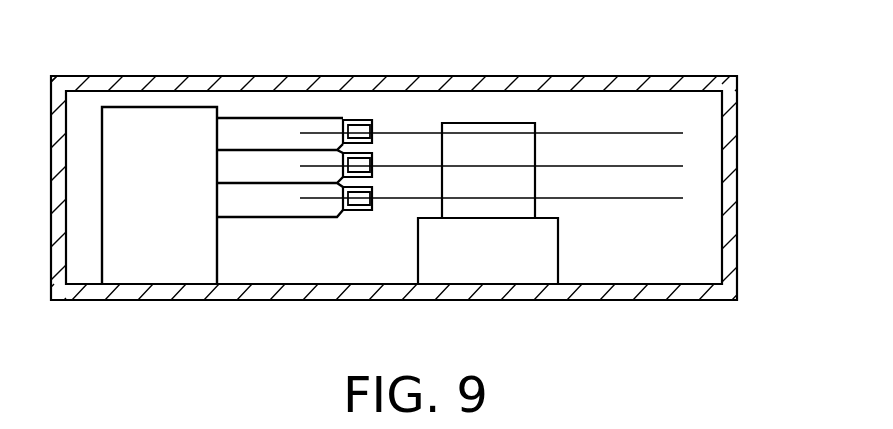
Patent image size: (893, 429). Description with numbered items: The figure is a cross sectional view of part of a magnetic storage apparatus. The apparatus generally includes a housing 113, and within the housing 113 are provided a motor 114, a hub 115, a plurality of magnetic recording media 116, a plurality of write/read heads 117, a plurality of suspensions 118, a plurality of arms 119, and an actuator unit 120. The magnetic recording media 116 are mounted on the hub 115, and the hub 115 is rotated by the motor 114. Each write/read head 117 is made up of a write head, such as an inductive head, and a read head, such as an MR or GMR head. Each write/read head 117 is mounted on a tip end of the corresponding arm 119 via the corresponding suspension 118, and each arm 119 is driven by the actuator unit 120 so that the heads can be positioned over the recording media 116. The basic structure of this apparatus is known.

The housing 113 is at (731, 259).
The motor 114 is at (471, 263).
The hub 115 is at (488, 123).
The magnetic recording media 116 is at (619, 133).
The write/read head 117 is at (371, 120).
The suspension 118 is at (347, 120).
The arm 119 is at (258, 118).
The actuator unit 120 is at (152, 265).